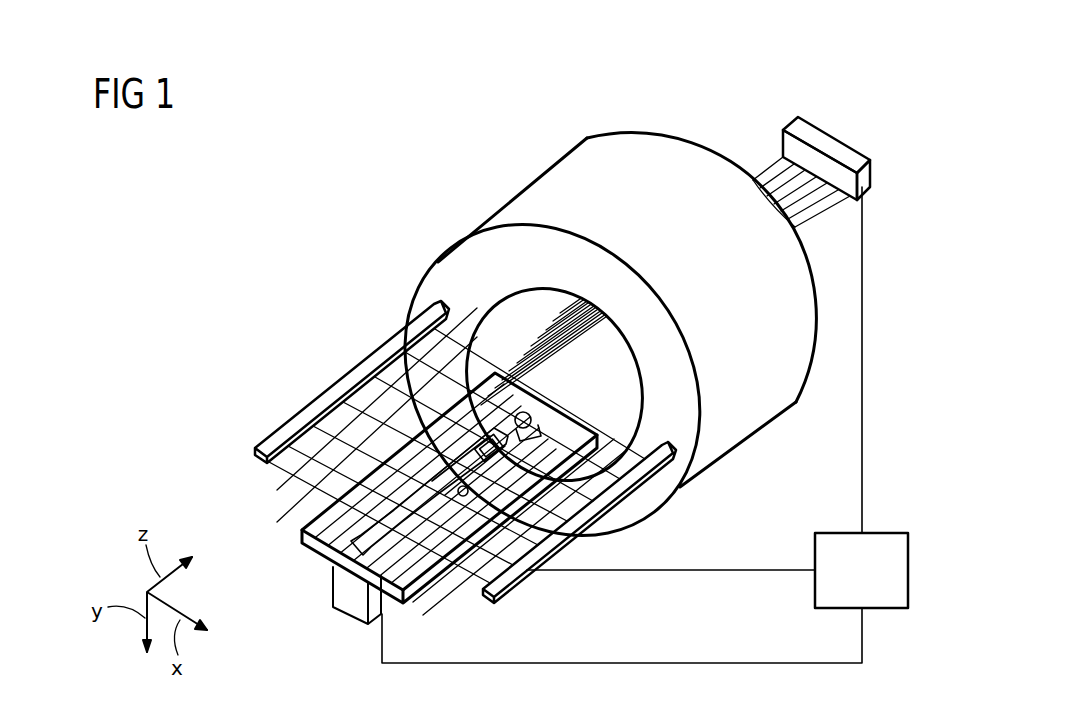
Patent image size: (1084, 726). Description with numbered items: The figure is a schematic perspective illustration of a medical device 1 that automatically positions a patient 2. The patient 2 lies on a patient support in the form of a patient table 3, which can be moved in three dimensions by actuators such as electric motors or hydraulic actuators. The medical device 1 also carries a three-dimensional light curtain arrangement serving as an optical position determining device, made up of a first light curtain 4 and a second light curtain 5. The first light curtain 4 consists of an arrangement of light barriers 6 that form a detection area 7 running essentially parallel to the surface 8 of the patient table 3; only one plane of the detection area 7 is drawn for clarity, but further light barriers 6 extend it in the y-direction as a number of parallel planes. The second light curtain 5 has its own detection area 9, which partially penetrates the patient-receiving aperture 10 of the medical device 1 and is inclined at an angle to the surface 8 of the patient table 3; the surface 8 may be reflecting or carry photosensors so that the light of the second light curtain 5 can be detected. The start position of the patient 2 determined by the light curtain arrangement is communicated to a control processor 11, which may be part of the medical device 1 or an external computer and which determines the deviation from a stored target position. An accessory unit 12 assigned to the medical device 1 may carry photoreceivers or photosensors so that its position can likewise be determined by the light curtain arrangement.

The medical device 1 is at (590, 157).
The patient 2 is at (382, 438).
The patient table 3 is at (315, 550).
The first light curtain 4 is at (275, 437).
The second light curtain 5 is at (832, 145).
The light barriers 6 is at (326, 457).
The detection area 7 is at (358, 430).
The surface 8 is at (320, 522).
The detection area 9 is at (553, 342).
The patient-receiving aperture 10 is at (517, 312).
The control processor 11 is at (886, 532).
The accessory unit 12 is at (425, 472).